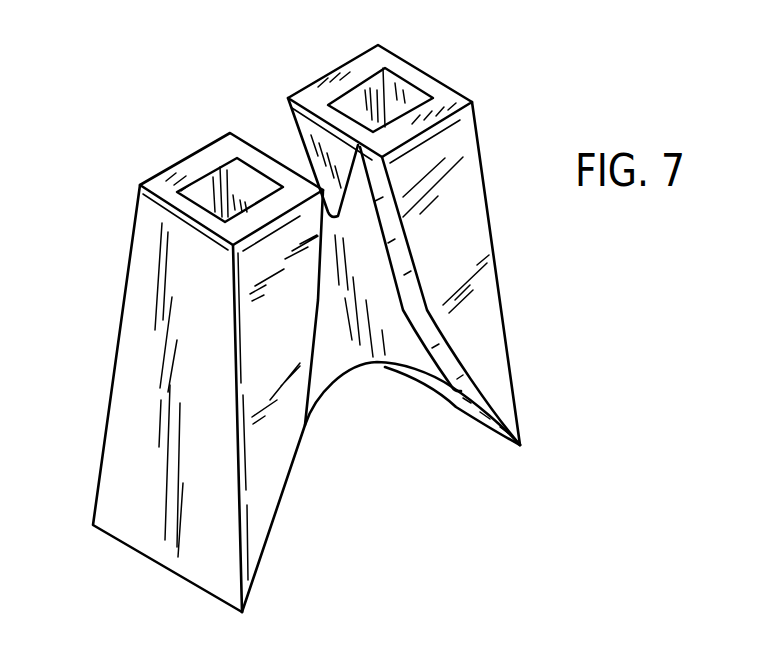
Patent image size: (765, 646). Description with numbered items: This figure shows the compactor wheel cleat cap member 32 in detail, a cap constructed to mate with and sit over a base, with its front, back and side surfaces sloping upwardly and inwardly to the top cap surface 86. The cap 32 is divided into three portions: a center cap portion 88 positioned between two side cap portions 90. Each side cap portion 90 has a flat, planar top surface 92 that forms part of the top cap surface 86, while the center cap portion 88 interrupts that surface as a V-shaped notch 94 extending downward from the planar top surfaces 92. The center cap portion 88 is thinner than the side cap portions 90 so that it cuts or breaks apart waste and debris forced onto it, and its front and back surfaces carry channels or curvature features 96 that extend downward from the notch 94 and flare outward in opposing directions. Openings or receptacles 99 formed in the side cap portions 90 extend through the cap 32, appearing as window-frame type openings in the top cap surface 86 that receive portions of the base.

The cap member 32 is at (566, 69).
The top cap surface 86 is at (211, 106).
The center cap portion 88 is at (275, 70).
The side cap portions 90 is at (129, 170).
The top surface 92 is at (190, 165).
The V-shaped notch 94 is at (275, 146).
The channels or curvature features 96 is at (391, 338).
The openings or receptacles 99 is at (206, 197).